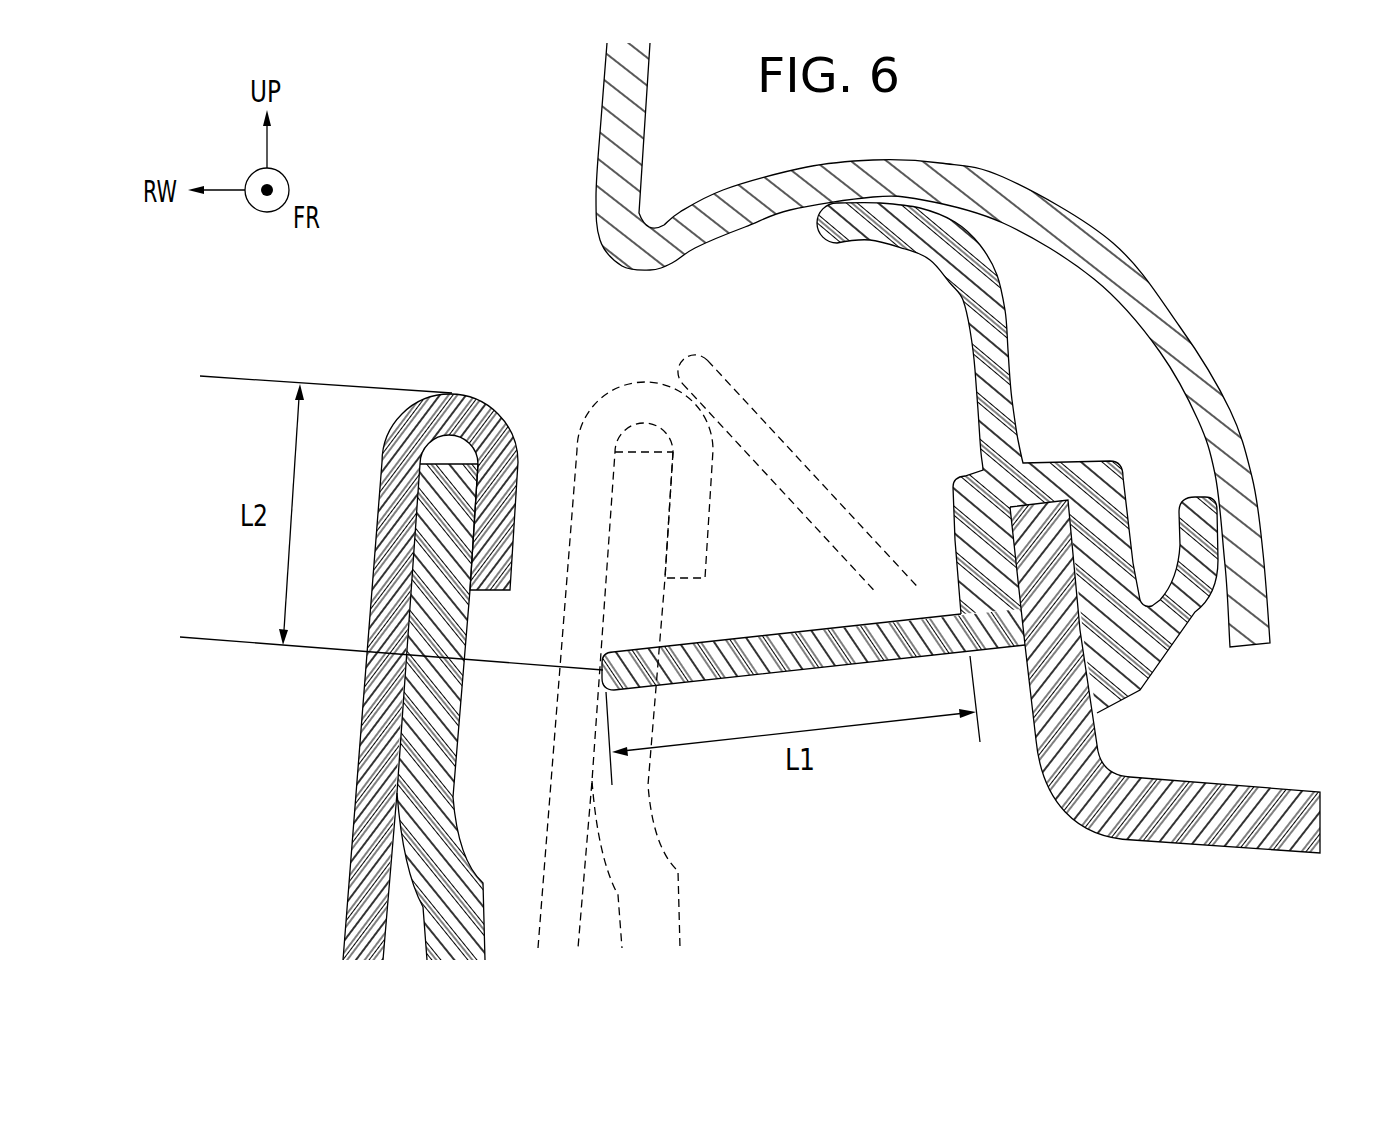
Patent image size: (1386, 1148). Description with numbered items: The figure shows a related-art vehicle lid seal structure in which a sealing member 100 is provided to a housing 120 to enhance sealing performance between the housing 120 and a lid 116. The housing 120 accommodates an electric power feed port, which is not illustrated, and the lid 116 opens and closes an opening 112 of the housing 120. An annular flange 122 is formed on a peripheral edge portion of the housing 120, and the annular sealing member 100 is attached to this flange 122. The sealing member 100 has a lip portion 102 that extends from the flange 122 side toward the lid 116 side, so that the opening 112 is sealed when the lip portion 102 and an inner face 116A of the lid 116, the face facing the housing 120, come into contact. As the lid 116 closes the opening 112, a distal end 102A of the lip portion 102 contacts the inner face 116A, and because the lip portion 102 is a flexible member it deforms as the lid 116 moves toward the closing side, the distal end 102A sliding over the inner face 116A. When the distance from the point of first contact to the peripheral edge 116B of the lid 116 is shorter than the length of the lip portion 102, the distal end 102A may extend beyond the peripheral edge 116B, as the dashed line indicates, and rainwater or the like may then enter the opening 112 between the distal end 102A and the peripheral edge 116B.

The sealing member 100 is at (1045, 352).
The lip portion 102 is at (753, 623).
The distal end of the lip portion 102A is at (602, 657).
The opening 112 is at (1098, 931).
The lid 116 is at (427, 573).
The inner face of the lid 116A is at (463, 707).
The peripheral edge of the lid 116B is at (449, 393).
The housing 120 is at (1142, 676).
The flange 122 is at (1043, 712).